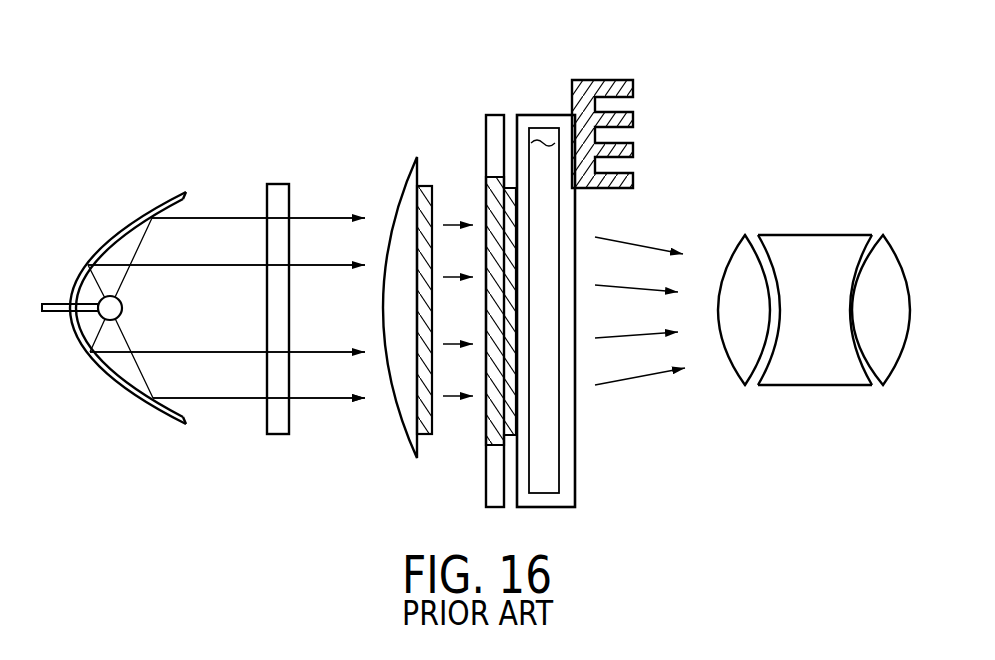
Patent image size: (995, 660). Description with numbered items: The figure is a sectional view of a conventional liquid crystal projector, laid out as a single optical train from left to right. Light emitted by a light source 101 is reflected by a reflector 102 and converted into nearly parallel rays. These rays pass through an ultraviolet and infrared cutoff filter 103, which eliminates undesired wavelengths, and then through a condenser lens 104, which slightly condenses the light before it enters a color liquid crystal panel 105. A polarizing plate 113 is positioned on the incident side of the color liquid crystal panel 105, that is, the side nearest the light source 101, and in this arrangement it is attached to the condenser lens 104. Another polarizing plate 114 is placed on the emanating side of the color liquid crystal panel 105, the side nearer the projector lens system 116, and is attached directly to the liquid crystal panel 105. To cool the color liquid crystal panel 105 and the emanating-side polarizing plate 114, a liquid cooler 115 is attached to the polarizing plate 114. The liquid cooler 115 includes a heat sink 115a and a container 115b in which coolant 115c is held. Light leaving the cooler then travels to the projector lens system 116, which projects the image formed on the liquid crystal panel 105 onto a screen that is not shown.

The light source 101 is at (108, 296).
The reflector 102 is at (155, 415).
The ultraviolet and infrared cutoff filter 103 is at (268, 190).
The condenser lens 104 is at (407, 410).
The color liquid crystal panel 105 is at (495, 485).
The polarizing plate 113 is at (428, 183).
The polarizing plate 114 is at (512, 193).
The liquid cooler 115 is at (626, 254).
The heat sink 115a is at (634, 88).
The container 115b is at (575, 227).
The coolant 115c is at (547, 451).
The projector lens system 116 is at (908, 412).